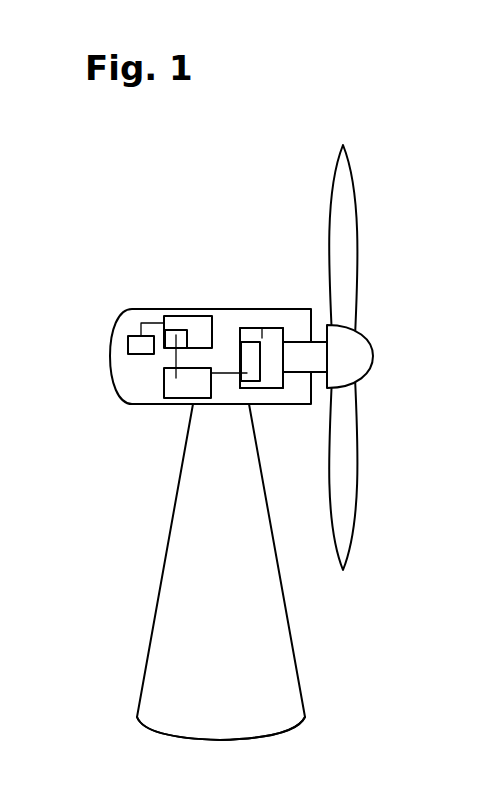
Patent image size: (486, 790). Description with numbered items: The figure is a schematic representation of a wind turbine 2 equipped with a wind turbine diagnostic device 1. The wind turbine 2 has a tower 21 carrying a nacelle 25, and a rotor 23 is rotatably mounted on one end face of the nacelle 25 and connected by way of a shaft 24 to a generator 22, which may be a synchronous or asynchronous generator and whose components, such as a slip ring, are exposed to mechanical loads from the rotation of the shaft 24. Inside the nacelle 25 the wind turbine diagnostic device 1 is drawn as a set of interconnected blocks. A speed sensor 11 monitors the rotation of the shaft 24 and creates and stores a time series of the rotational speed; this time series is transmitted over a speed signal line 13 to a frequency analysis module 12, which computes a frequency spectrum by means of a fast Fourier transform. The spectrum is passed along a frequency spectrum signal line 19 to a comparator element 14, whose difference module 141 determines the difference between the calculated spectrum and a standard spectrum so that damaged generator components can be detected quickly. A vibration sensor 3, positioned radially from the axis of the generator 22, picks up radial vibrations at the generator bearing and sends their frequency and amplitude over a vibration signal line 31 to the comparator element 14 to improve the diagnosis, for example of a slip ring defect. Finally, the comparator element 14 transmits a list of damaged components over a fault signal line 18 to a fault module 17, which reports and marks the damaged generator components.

The wind turbine diagnostic device 1 is at (125, 375).
The wind turbine 2 is at (314, 602).
The vibration sensor 3 is at (277, 328).
The speed sensor 11 is at (247, 358).
The frequency analysis module 12 is at (184, 388).
The speed signal line 13 is at (228, 377).
The comparator element 14 is at (211, 320).
The difference module 141 is at (177, 335).
The fault module 17 is at (137, 343).
The fault signal line 18 is at (155, 323).
The frequency spectrum signal line 19 is at (172, 358).
The tower 21 is at (280, 687).
The generator 22 is at (272, 386).
The rotor 23 is at (352, 352).
The shaft 24 is at (302, 346).
The nacelle 25 is at (107, 356).
The vibration signal line 31 is at (249, 328).